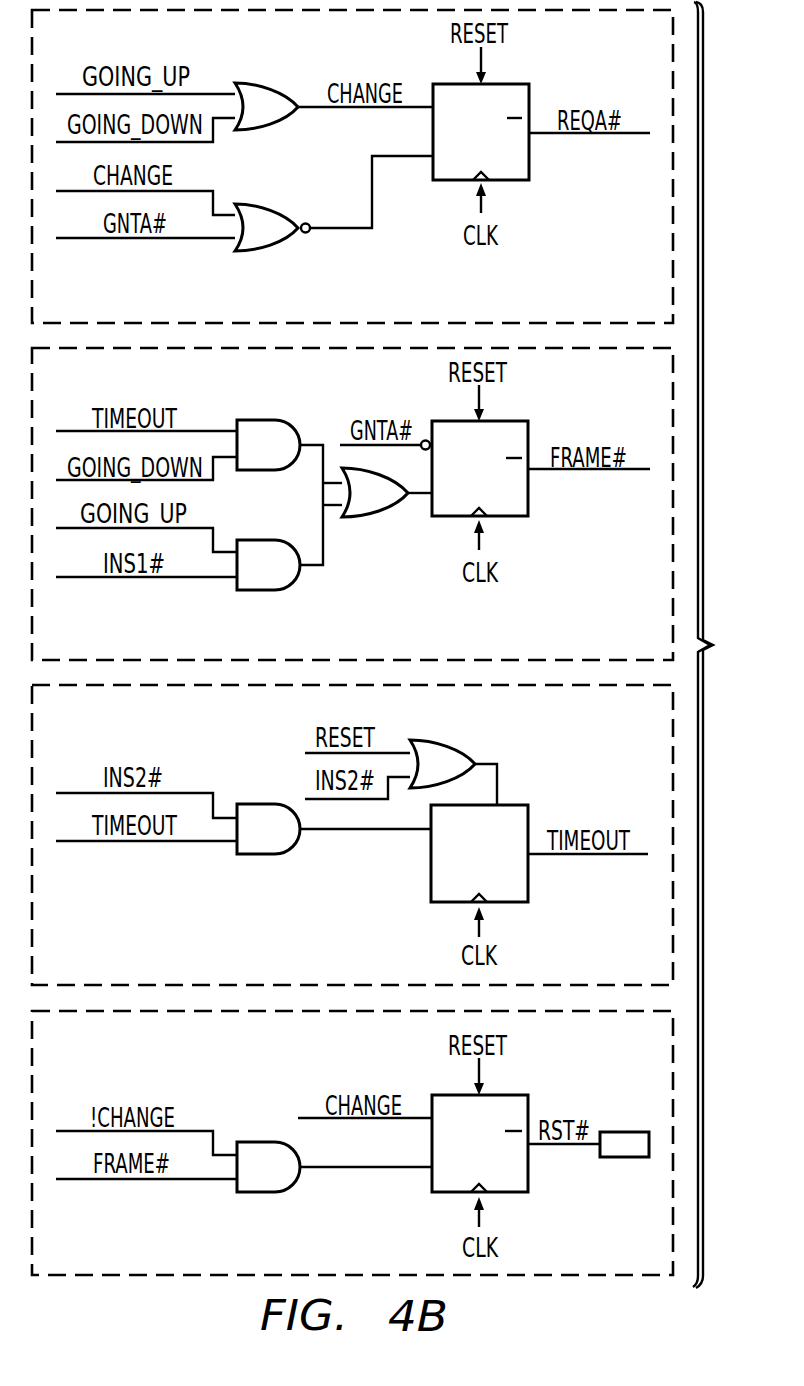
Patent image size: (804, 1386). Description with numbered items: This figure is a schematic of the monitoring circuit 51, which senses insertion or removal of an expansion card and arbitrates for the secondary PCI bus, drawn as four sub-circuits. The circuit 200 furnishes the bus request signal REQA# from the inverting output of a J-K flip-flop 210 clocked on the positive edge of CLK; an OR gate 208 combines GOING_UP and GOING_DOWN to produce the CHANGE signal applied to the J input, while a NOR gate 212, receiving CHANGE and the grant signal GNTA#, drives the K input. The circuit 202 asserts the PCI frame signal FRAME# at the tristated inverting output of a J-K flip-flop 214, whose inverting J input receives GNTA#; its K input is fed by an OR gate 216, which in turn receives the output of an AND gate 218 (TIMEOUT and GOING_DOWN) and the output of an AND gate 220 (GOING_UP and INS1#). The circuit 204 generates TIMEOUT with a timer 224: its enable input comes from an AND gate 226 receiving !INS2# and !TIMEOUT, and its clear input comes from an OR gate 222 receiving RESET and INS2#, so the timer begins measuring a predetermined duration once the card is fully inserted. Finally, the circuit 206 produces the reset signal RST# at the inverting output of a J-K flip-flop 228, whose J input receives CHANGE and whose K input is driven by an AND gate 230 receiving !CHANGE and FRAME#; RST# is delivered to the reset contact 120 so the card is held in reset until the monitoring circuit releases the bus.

The monitoring circuit 51 is at (718, 645).
The reset contact 120 is at (623, 1132).
The circuit 200 is at (645, 302).
The circuit 202 is at (645, 639).
The circuit 204 is at (645, 965).
The circuit 206 is at (645, 1253).
The OR gate 208 is at (257, 81).
The J-K flip-flop 210 is at (530, 155).
The NOR gate 212 is at (257, 253).
The J-K flip-flop 214 is at (529, 492).
The OR gate 216 is at (365, 520).
The AND gate 218 is at (257, 420).
The AND gate 220 is at (257, 591).
The OR gate 222 is at (482, 728).
The timer 224 is at (529, 878).
The AND gate 226 is at (257, 855).
The J-K flip-flop 228 is at (529, 1168).
The AND gate 230 is at (257, 1193).